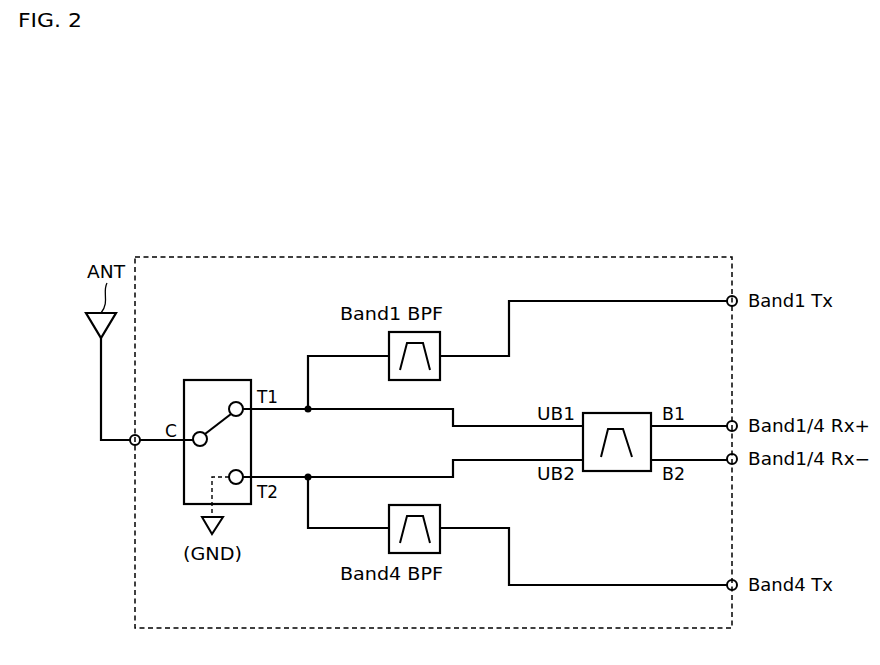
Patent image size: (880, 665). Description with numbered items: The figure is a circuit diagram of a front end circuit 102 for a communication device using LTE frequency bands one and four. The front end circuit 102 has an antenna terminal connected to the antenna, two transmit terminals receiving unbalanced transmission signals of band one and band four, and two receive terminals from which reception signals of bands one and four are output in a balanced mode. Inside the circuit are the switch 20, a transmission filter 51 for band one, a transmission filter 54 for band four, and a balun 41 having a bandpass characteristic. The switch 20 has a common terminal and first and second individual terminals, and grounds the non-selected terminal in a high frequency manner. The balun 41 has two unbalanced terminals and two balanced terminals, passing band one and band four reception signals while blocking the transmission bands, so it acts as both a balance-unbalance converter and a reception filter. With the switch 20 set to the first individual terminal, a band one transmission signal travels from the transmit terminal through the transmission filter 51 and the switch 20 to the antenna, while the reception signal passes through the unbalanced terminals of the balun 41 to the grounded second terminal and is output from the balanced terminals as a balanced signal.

The front end circuit 102 is at (503, 256).
The switch 20 is at (220, 380).
The transmission filter 51 is at (440, 332).
The transmission filter 54 is at (440, 505).
The balun 41 is at (619, 413).